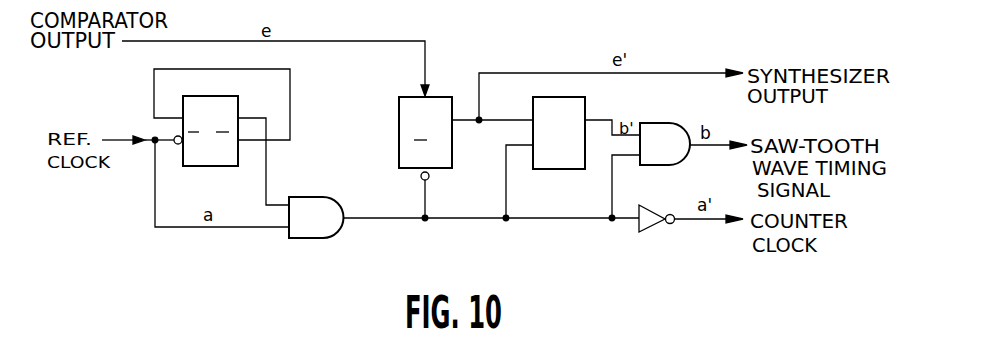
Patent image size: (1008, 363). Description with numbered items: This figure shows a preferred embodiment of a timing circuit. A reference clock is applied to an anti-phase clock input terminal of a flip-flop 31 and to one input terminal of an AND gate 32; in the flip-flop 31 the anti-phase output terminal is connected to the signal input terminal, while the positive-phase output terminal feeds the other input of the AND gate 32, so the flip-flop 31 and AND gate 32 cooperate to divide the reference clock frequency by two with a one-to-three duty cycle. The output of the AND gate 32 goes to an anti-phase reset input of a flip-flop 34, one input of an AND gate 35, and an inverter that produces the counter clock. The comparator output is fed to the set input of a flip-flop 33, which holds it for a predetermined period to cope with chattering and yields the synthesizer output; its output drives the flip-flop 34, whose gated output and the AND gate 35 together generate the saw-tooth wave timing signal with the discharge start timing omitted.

The flip-flop 31 is at (238, 103).
The AND gate 32 is at (340, 207).
The flip-flop 33 is at (440, 97).
The flip-flop 34 is at (585, 106).
The AND gate 35 is at (666, 120).